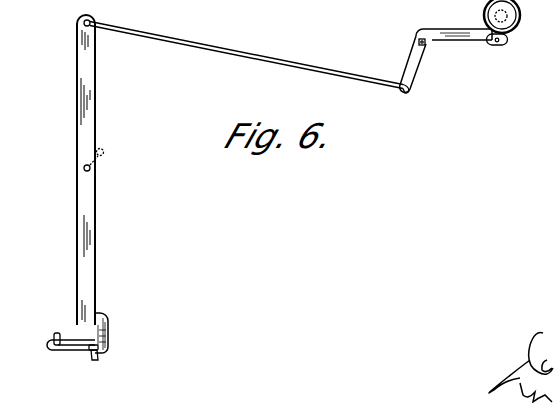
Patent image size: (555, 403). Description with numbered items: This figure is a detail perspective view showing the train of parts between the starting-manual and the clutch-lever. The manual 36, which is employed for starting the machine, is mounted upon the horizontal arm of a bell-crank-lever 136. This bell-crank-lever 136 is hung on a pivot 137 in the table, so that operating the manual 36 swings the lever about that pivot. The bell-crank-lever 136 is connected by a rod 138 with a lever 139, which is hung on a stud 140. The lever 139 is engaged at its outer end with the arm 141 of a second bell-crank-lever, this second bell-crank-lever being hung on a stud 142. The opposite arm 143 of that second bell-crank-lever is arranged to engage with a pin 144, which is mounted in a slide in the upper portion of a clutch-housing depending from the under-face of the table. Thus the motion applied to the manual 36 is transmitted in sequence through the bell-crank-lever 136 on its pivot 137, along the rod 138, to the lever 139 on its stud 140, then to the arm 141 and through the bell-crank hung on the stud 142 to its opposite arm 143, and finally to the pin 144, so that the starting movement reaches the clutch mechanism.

The manual 36 is at (518, 15).
The bell-crank-lever 136 is at (427, 44).
The pivot 137 is at (418, 44).
The rod 138 is at (286, 49).
The lever 139 is at (91, 111).
The stud 140 is at (103, 157).
The arm 141 is at (101, 331).
The stud 142 is at (100, 359).
The arm 143 is at (74, 352).
The pin 144 is at (56, 334).